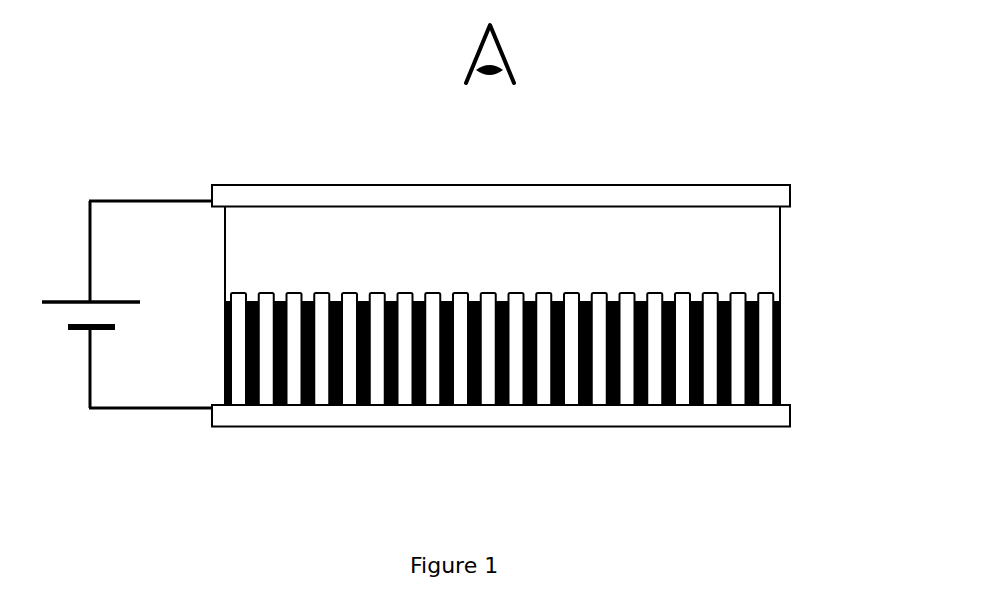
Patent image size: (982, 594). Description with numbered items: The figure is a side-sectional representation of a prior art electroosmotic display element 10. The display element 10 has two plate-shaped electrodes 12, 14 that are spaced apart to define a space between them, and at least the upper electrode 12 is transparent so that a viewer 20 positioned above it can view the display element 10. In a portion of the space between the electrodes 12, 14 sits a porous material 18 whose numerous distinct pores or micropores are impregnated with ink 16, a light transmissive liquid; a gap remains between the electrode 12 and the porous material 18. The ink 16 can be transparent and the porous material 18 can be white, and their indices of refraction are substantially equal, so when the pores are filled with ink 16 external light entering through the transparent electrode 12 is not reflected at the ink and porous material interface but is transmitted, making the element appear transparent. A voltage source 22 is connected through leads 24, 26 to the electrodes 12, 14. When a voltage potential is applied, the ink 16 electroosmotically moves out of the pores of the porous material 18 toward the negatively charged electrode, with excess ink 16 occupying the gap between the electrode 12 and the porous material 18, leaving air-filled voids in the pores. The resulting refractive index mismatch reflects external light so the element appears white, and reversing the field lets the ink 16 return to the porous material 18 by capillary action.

The display element 10 is at (537, 338).
The electrode 12 is at (790, 196).
The electrode 14 is at (790, 417).
The ink 16 is at (668, 302).
The porous material 18 is at (738, 293).
The viewer 20 is at (508, 53).
The voltage source 22 is at (65, 301).
The lead 24 is at (153, 200).
The lead 26 is at (160, 410).